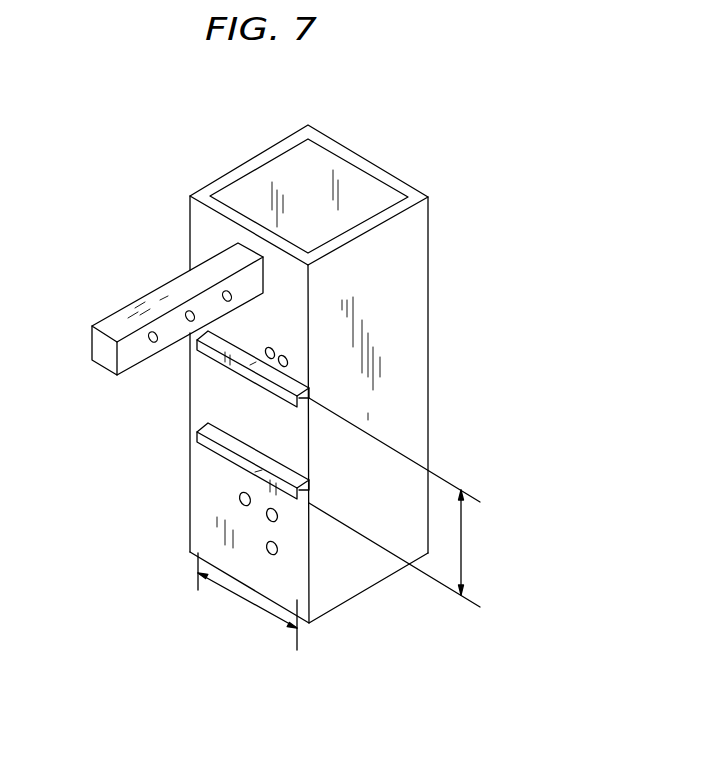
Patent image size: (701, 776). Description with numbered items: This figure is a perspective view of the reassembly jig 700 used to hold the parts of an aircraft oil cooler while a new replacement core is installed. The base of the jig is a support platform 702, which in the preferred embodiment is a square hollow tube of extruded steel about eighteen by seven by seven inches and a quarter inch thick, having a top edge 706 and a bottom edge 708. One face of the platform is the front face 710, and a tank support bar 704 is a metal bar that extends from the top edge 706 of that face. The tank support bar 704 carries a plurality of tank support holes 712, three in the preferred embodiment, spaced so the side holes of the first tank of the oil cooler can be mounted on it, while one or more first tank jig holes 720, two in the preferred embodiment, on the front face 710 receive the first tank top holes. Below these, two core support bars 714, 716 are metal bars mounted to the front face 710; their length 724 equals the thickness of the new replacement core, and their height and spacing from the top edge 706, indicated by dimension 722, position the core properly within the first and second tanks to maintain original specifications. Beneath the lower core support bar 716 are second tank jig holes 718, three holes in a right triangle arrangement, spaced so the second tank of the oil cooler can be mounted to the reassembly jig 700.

The reassembly jig 700 is at (516, 70).
The support platform 702 is at (404, 248).
The tank support bar 704 is at (112, 325).
The top edge 706 is at (360, 163).
The bottom edge 708 is at (363, 593).
The front face 710 is at (283, 590).
The tank support holes 712 is at (223, 297).
The core support bar 714 is at (207, 357).
The core support bar 716 is at (202, 440).
The second tank jig holes 718 is at (267, 550).
The first tank jig holes 720 is at (274, 351).
The rail spacing dimension 722 is at (463, 542).
The length 724 is at (243, 600).